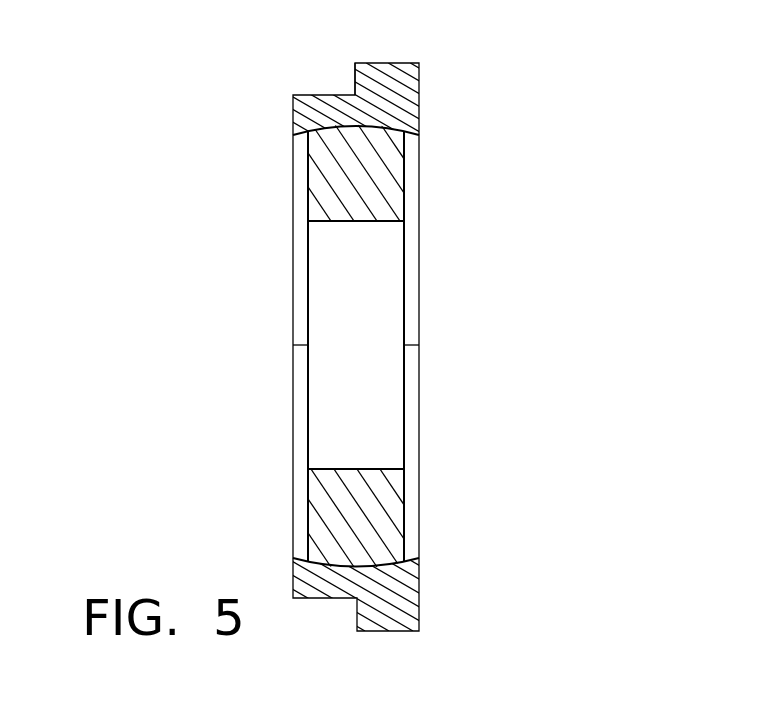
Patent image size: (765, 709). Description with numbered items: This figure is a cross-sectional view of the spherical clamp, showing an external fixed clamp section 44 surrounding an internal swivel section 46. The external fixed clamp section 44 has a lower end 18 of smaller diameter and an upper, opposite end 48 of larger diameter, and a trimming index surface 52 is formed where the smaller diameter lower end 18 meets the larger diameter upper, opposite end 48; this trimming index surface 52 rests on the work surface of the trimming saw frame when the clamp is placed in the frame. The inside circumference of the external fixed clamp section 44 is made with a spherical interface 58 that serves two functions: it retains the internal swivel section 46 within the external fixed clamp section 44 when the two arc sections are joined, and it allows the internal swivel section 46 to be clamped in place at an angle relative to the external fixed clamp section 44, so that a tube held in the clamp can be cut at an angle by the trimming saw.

The lower end 18 is at (293, 108).
The external fixed clamp section 44 is at (442, 598).
The internal swivel section 46 is at (380, 511).
The upper, opposite end 48 is at (420, 106).
The trimming index surface 52 is at (348, 76).
The spherical interface 58 is at (352, 132).